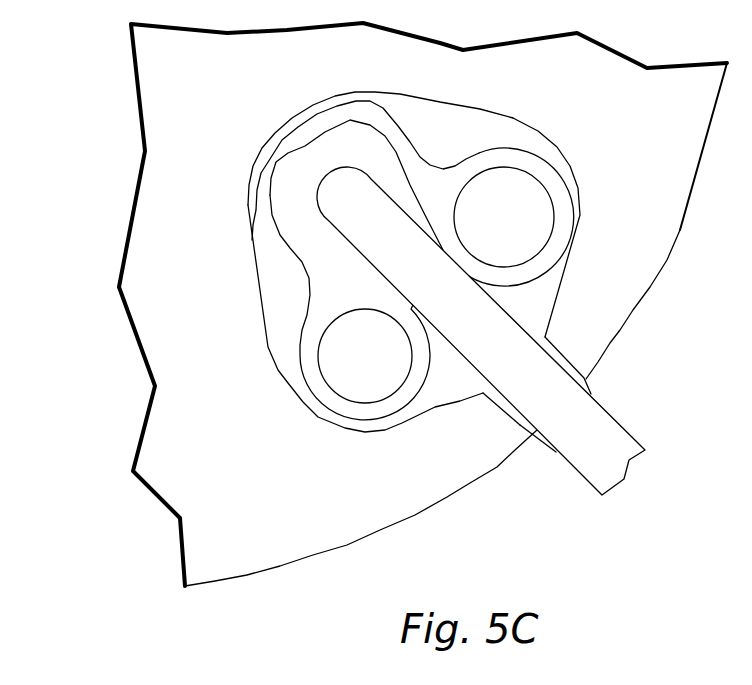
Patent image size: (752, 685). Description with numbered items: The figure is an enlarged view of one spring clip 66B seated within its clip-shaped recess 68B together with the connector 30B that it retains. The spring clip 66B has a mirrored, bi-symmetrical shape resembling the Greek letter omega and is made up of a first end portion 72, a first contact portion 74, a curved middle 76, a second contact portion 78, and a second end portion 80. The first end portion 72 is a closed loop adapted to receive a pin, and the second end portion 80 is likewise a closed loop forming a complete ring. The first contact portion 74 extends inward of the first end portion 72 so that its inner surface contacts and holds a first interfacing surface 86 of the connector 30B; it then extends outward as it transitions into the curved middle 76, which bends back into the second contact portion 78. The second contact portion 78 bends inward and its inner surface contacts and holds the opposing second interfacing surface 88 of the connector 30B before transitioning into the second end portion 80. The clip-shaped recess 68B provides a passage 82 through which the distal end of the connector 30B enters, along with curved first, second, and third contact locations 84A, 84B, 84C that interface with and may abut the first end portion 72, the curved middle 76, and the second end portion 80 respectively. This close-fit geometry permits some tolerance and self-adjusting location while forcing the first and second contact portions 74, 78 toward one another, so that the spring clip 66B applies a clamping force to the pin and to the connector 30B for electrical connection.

The connector 30B is at (506, 421).
The spring clip 66B is at (256, 136).
The clip-shaped recess 68B is at (254, 348).
The first end portion 72 is at (551, 180).
The first contact portion 74 is at (466, 259).
The curved middle 76 is at (310, 132).
The second contact portion 78 is at (405, 318).
The second end portion 80 is at (307, 395).
The passage 82 is at (542, 445).
The first contact location 84A is at (582, 201).
The second contact location 84B is at (332, 97).
The third contact location 84C is at (320, 425).
The first interfacing surface 86 is at (522, 321).
The second interfacing surface 88 is at (470, 367).